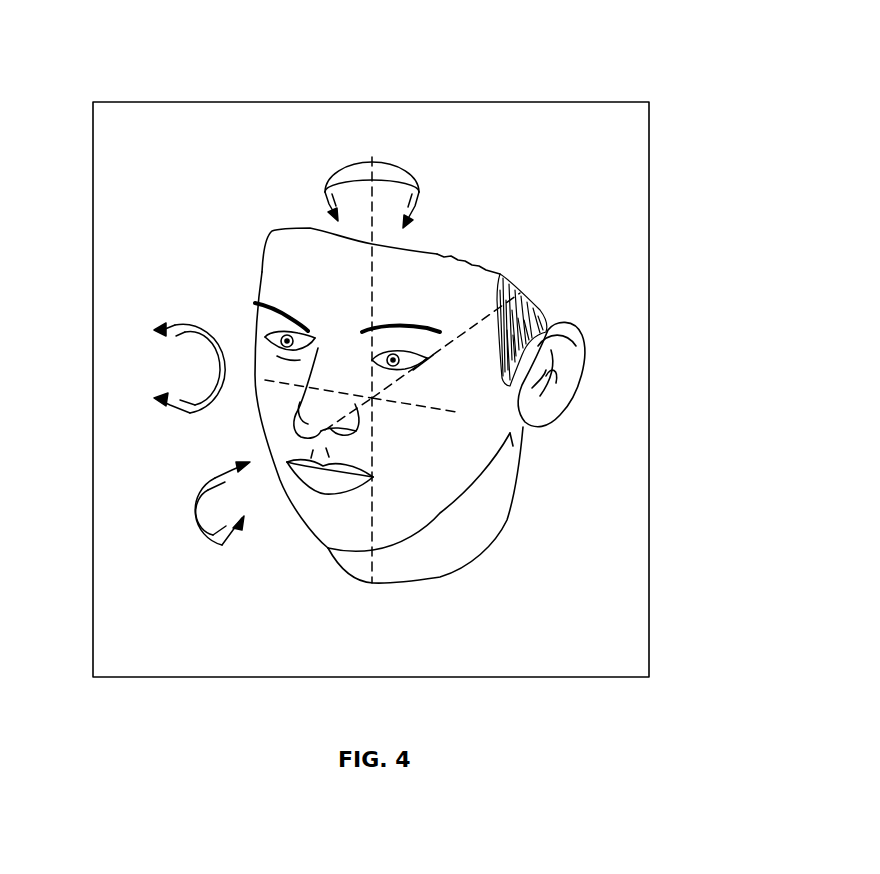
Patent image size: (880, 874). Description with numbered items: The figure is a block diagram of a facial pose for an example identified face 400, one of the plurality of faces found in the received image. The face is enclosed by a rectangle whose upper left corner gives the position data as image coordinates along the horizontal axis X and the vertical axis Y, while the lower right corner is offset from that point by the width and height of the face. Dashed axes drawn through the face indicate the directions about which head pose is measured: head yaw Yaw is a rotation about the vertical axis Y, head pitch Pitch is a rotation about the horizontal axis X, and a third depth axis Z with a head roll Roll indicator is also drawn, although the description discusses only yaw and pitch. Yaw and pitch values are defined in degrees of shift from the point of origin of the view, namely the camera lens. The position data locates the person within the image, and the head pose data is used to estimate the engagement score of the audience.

The identified face 400 is at (128, 47).
The X coordinate X is at (457, 412).
The Y coordinate Y is at (372, 583).
The Z axis Z is at (520, 293).
The head yaw Yaw is at (372, 178).
The head pitch Pitch is at (265, 380).
The roll rotation indicator Roll is at (325, 430).